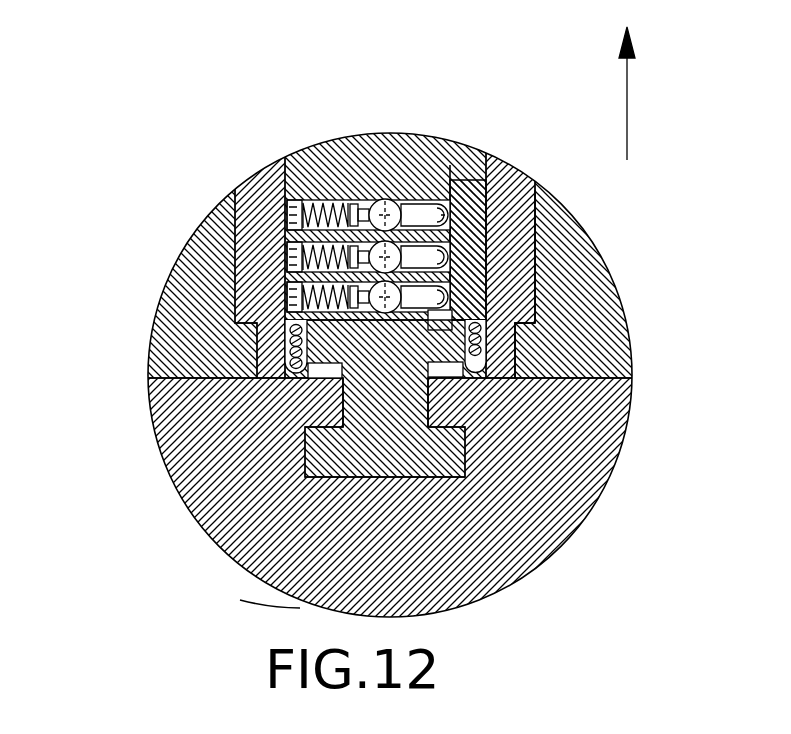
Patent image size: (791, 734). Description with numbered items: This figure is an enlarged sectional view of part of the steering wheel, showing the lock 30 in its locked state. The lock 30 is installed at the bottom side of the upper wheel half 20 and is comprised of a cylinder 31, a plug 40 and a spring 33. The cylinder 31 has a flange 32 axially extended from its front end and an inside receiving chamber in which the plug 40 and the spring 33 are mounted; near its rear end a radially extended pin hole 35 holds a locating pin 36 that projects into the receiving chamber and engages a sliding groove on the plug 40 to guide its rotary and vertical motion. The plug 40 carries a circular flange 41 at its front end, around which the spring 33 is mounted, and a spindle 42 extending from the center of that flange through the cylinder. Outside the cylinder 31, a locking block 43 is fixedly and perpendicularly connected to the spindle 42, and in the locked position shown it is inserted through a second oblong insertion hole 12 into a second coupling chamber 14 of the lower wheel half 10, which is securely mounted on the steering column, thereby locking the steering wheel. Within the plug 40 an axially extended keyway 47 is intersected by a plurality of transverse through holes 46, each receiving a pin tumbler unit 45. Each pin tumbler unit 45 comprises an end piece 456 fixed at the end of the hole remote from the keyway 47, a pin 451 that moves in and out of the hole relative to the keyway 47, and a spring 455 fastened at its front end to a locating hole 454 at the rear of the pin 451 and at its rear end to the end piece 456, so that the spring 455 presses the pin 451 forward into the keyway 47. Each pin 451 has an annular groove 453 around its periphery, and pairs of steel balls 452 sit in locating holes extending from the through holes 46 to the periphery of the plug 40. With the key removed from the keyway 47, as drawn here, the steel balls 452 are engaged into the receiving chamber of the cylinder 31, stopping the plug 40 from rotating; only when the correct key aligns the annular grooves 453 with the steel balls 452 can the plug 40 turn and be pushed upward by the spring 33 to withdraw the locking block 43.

The lower wheel half 10 is at (210, 553).
The second oblong insertion hole 12 is at (428, 400).
The second coupling chamber 14 is at (375, 448).
The upper wheel half 20 is at (178, 290).
The lock 30 is at (218, 152).
The cylinder 31 is at (530, 258).
The flange 32 is at (488, 337).
The spring 33 is at (520, 323).
The pin hole 35 is at (537, 200).
The locating pin 36 is at (518, 185).
The plug 40 is at (237, 163).
The circular flange 41 is at (300, 335).
The spindle 42 is at (395, 388).
The locking block 43 is at (268, 585).
The pin tumbler unit 45 is at (335, 205).
The transverse through hole 46 is at (470, 198).
The keyway 47 is at (452, 207).
The pin 451 is at (440, 197).
The steel ball 452 is at (385, 198).
The annular groove 453 is at (432, 200).
The locating hole 454 is at (358, 200).
The spring 455 is at (310, 205).
The end piece 456 is at (288, 213).